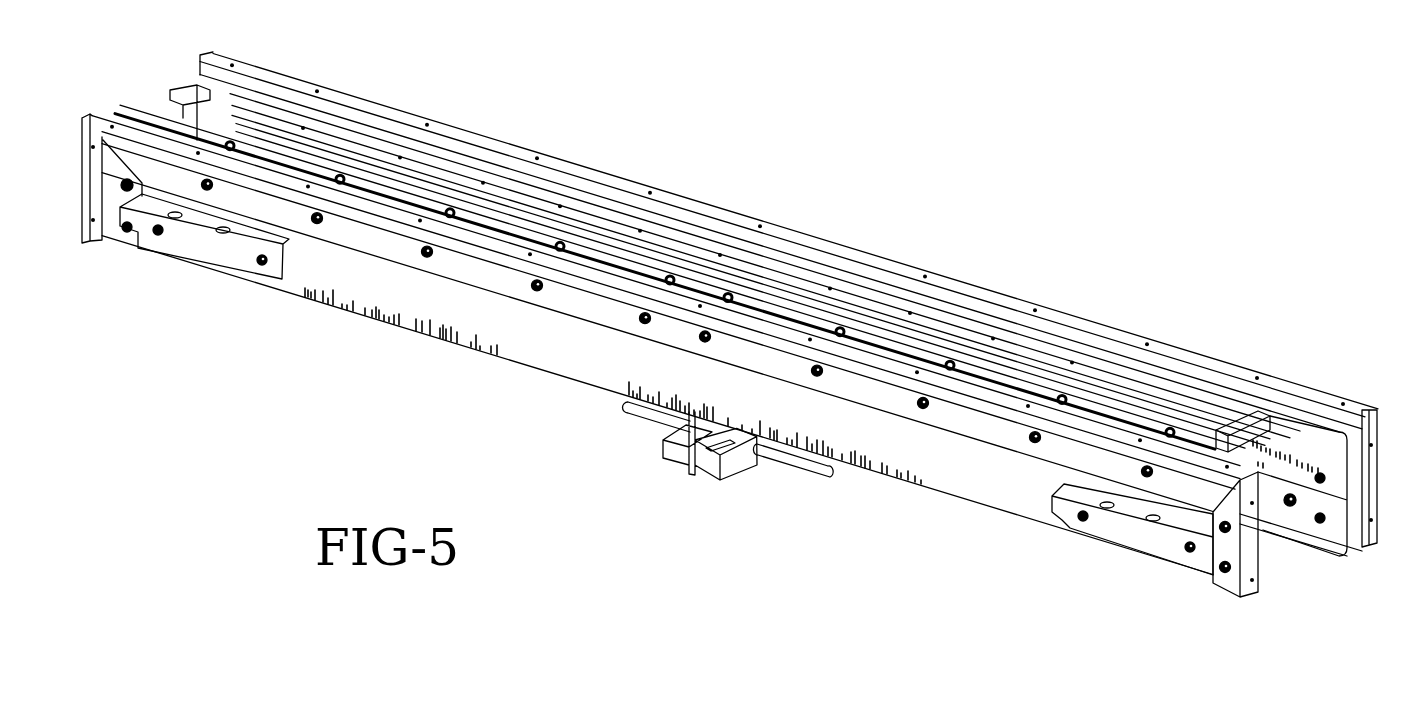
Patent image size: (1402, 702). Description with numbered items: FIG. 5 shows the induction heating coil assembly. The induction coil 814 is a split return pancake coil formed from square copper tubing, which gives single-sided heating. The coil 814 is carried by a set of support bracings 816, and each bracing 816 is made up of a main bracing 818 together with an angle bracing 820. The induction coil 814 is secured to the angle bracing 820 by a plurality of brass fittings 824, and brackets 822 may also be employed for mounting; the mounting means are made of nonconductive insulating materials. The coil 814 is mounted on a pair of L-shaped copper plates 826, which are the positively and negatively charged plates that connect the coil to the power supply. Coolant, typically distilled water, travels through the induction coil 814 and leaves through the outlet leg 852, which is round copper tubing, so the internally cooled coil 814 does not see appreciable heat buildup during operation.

The induction coil 814 is at (1245, 410).
The support bracing 816 is at (130, 116).
The main bracing 818 is at (1322, 548).
The angle bracing 820 is at (962, 468).
The bracket 822 is at (232, 238).
The brass fitting 824 is at (1170, 434).
The copper plate 826 is at (673, 452).
The outlet leg 852 is at (822, 469).